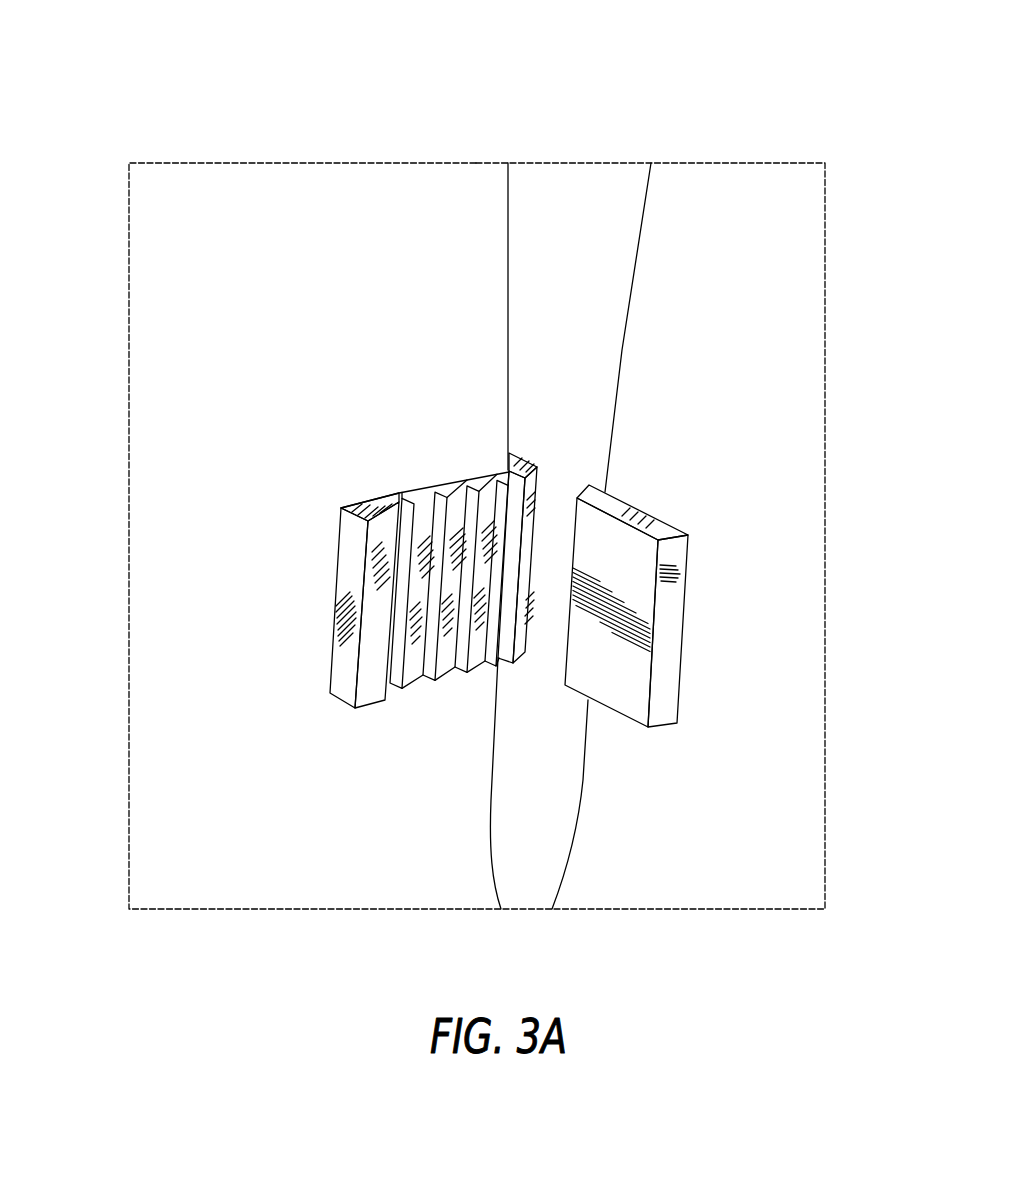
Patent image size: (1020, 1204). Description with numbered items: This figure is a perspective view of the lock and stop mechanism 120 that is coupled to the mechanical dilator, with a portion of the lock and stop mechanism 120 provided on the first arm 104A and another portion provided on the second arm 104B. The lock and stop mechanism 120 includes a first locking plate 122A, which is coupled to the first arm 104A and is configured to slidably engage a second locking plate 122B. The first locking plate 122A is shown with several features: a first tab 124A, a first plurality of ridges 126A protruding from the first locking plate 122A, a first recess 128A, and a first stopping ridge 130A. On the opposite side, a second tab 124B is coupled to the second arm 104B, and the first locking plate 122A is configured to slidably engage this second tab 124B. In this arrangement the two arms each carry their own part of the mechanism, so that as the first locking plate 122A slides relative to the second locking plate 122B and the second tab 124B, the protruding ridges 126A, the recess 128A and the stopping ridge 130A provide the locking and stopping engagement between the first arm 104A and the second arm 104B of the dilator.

The lock and stop mechanism 120 is at (557, 190).
The first arm 104A is at (155, 244).
The second arm 104B is at (778, 325).
The first locking plate 122A is at (392, 589).
The second locking plate 122B is at (735, 604).
The first tab 124A is at (535, 512).
The second tab 124B is at (624, 642).
The first plurality of ridges 126A is at (518, 448).
The first recess 128A is at (392, 521).
The first stopping ridge 130A is at (345, 653).